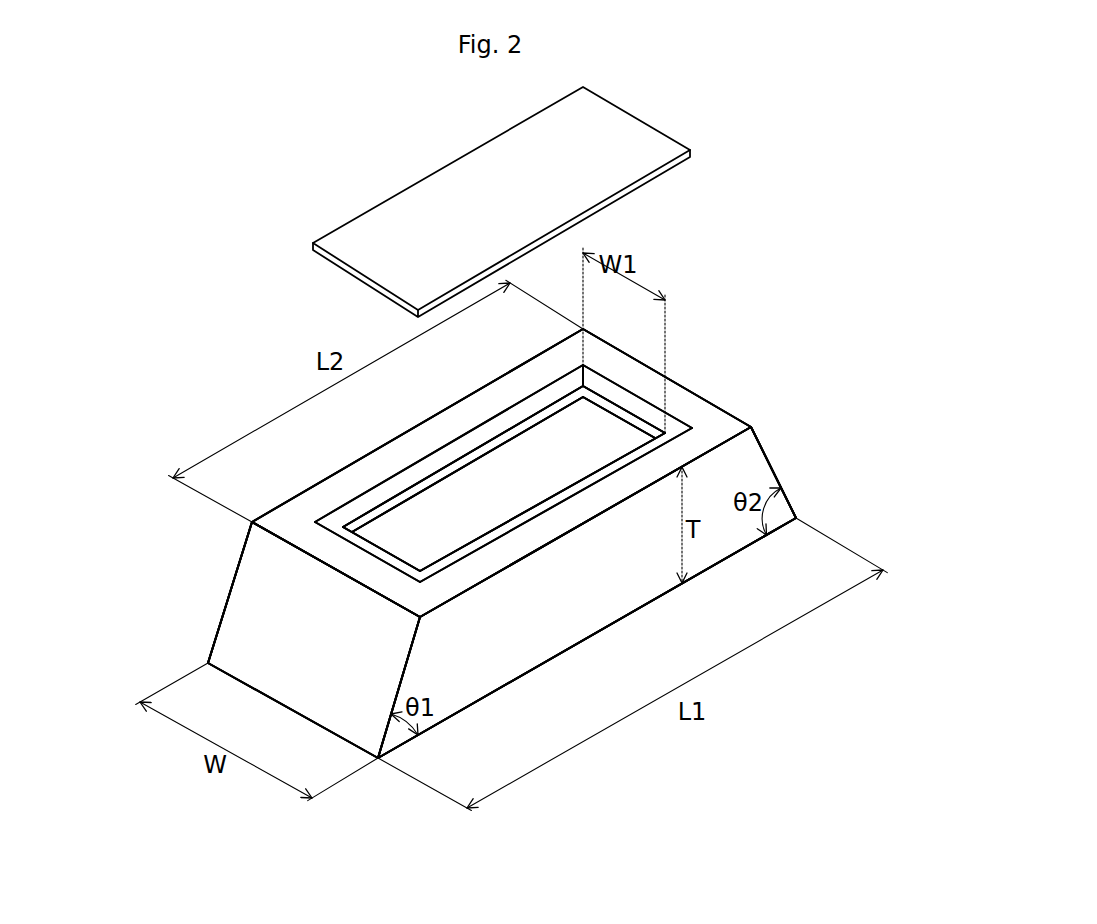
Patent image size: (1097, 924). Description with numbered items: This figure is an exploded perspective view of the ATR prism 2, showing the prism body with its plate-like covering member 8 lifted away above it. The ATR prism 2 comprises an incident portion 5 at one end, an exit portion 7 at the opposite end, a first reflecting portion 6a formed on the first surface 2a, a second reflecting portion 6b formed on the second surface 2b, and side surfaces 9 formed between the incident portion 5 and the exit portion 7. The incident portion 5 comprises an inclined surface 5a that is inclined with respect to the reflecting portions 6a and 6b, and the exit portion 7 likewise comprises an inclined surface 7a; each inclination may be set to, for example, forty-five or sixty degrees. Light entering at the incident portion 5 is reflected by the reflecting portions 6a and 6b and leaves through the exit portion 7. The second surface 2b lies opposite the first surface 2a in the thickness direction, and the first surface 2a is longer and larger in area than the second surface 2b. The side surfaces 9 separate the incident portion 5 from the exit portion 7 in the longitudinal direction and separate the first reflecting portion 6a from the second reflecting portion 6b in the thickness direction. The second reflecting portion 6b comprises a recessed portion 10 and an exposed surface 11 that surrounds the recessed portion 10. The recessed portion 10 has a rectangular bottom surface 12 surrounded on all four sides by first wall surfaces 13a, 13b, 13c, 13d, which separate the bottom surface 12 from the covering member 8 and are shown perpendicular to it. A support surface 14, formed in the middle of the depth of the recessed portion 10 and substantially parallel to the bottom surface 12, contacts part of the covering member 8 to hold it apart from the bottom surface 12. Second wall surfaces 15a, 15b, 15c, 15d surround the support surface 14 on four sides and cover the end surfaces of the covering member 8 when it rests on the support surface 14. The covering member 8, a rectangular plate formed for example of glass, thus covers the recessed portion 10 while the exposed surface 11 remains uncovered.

The ATR prism 2 is at (776, 291).
The first surface 2a is at (722, 564).
The second surface 2b is at (281, 521).
The incident portion 5 is at (251, 617).
The inclined surface 5a is at (281, 662).
The first reflecting portion 6a is at (664, 598).
The second reflecting portion 6b is at (395, 533).
The exit portion 7 is at (778, 452).
The inclined surface 7a is at (780, 468).
The covering member 8 is at (411, 183).
The side surfaces 9 is at (241, 556).
The recessed portion 10 is at (553, 430).
The exposed surface 11 is at (345, 557).
The bottom surface 12 is at (441, 537).
The first wall surface 13a is at (387, 552).
The first wall surface 13b is at (602, 403).
The first wall surface 13c is at (513, 512).
The first wall surface 13d is at (477, 457).
The support surface 14 is at (630, 407).
The second wall surface 15a is at (362, 537).
The second wall surface 15b is at (611, 385).
The second wall surface 15c is at (578, 477).
The second wall surface 15d is at (425, 461).